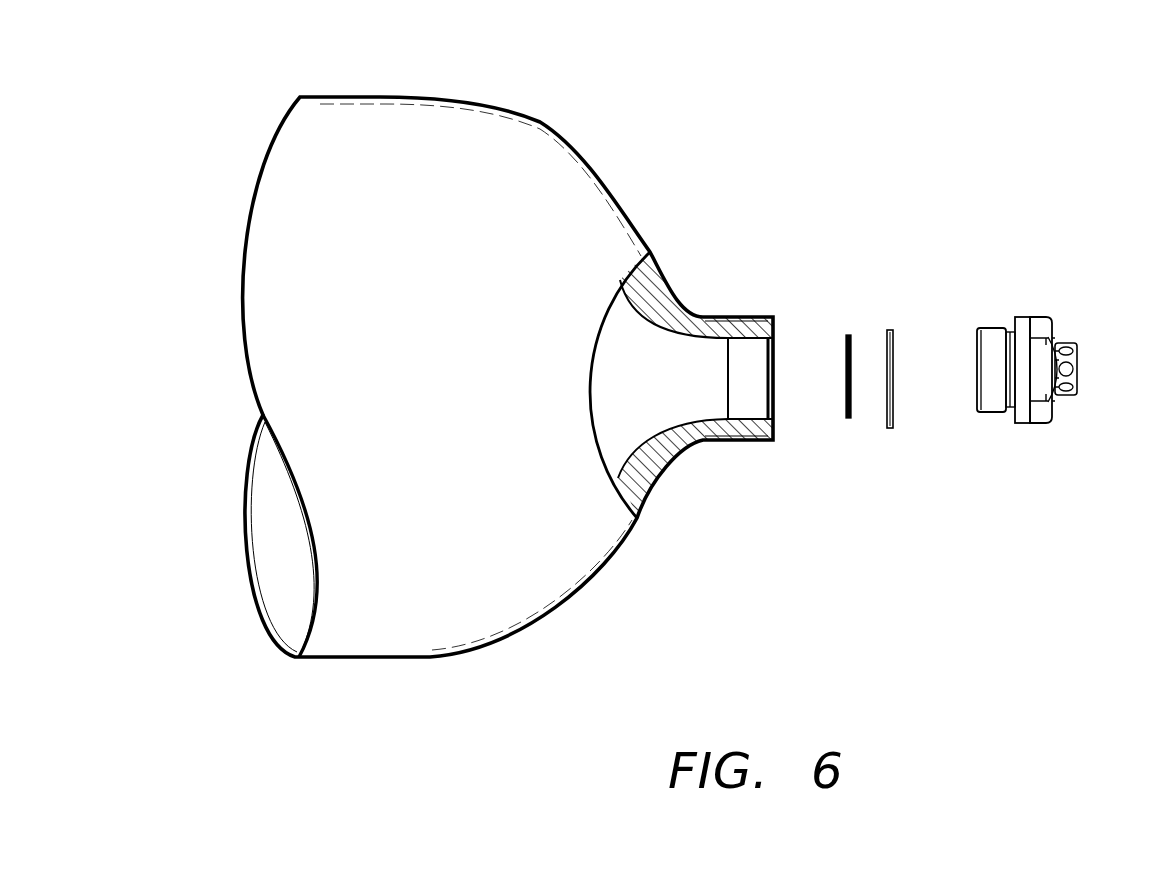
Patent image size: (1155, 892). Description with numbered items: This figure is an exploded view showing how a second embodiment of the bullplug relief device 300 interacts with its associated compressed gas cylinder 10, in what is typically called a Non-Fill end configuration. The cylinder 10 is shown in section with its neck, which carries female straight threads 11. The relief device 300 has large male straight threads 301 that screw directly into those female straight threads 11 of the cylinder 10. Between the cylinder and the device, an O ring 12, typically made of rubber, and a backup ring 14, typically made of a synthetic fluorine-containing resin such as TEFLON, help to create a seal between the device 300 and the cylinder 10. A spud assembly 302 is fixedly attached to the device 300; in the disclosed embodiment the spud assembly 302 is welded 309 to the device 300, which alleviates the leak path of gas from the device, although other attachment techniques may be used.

The compressed gas cylinder 10 is at (386, 95).
The female straight threads 11 is at (752, 340).
The O ring 12 is at (848, 418).
The backup ring 14 is at (893, 428).
The bullplug relief device 300 is at (1049, 339).
The large male straight threads 301 is at (995, 330).
The spud assembly 302 is at (1077, 362).
The weld 309 is at (1057, 400).